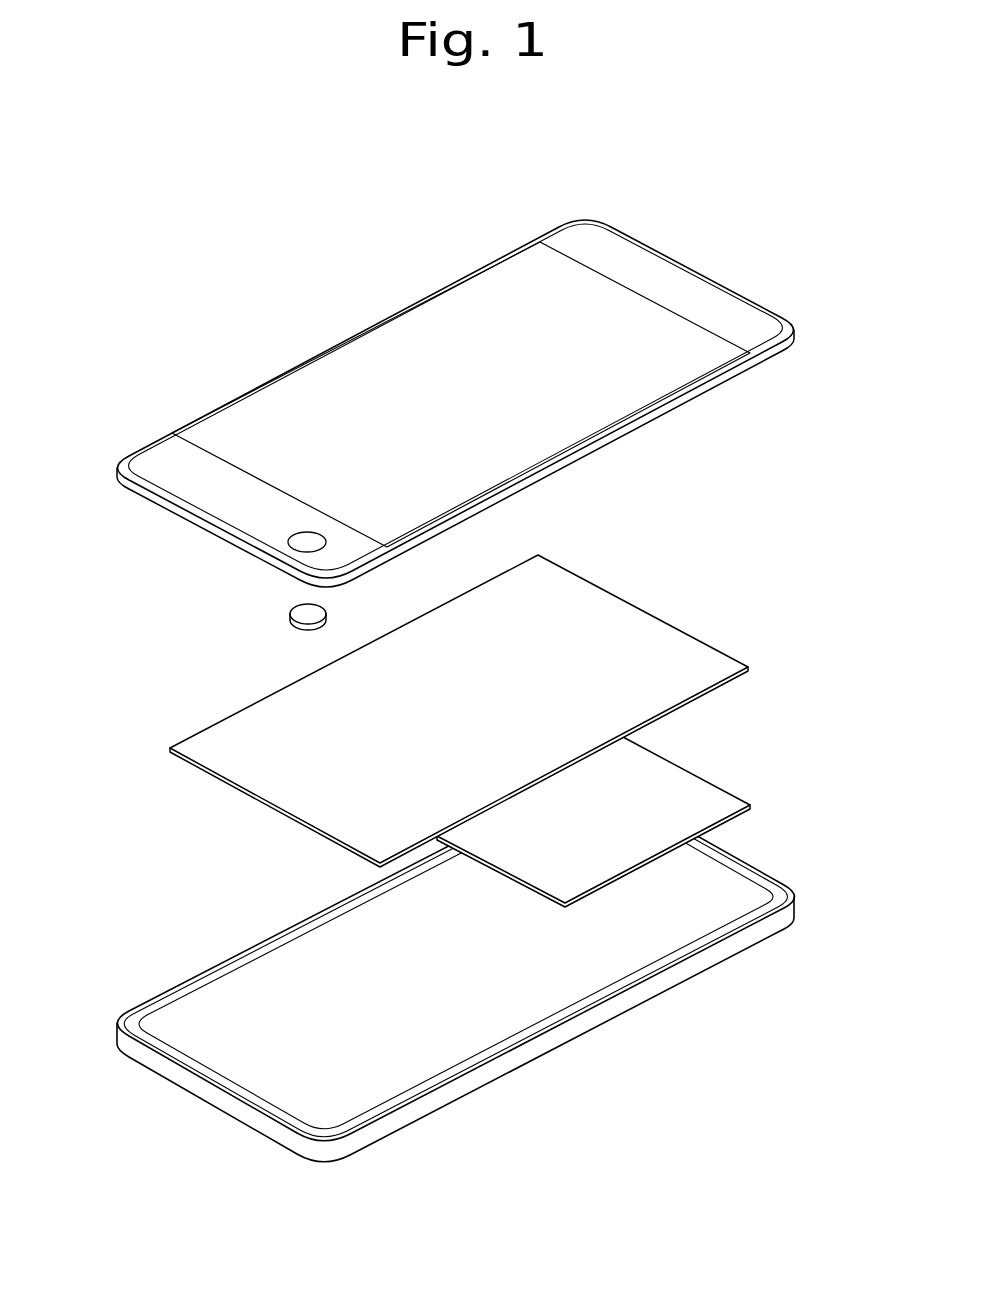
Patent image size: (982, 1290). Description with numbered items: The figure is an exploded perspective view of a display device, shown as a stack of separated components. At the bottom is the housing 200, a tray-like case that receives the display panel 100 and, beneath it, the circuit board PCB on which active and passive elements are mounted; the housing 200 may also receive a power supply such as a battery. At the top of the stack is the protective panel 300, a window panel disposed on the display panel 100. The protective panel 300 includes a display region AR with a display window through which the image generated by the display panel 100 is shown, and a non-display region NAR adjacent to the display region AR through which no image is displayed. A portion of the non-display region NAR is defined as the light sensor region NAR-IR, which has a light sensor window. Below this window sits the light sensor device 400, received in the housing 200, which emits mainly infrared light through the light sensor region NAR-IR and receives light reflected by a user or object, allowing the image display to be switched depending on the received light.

The display panel 100 is at (680, 660).
The housing 200 is at (630, 998).
The protective panel 300 is at (728, 310).
The light sensor device 400 is at (297, 610).
The display region AR is at (450, 312).
The non-display region NAR is at (632, 260).
The light sensor region NAR-IR is at (300, 540).
The circuit board PCB is at (680, 795).